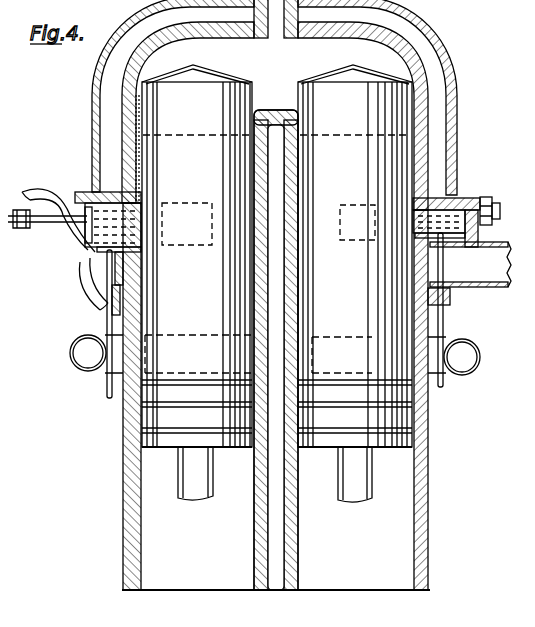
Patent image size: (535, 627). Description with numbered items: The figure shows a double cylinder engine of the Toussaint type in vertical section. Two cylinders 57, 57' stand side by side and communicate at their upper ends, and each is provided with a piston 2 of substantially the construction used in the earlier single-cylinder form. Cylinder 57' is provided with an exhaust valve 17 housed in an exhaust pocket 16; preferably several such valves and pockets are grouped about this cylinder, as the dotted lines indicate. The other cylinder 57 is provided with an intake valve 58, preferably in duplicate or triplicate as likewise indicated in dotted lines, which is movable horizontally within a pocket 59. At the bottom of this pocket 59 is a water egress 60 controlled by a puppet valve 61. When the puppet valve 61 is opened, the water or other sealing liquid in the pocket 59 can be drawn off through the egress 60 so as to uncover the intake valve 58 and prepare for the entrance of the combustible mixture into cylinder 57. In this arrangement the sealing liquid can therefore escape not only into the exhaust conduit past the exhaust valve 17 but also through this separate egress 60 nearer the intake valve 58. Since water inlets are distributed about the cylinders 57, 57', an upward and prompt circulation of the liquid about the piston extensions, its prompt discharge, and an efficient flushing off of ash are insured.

The piston 2 is at (163, 418).
The exhaust pocket 16 is at (450, 210).
The exhaust valve 17 is at (443, 263).
The cylinder 57 is at (104, 396).
The cylinder 57' is at (450, 400).
The intake valve 58 is at (44, 198).
The pocket 59 is at (89, 200).
The water egress 60 is at (84, 285).
The puppet valve 61 is at (95, 258).